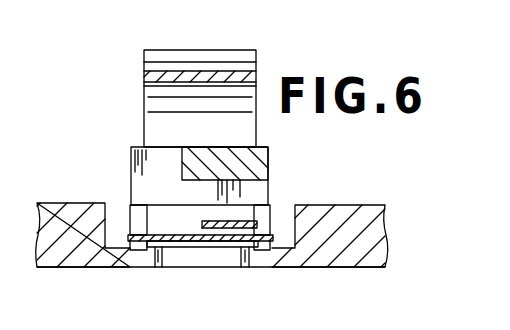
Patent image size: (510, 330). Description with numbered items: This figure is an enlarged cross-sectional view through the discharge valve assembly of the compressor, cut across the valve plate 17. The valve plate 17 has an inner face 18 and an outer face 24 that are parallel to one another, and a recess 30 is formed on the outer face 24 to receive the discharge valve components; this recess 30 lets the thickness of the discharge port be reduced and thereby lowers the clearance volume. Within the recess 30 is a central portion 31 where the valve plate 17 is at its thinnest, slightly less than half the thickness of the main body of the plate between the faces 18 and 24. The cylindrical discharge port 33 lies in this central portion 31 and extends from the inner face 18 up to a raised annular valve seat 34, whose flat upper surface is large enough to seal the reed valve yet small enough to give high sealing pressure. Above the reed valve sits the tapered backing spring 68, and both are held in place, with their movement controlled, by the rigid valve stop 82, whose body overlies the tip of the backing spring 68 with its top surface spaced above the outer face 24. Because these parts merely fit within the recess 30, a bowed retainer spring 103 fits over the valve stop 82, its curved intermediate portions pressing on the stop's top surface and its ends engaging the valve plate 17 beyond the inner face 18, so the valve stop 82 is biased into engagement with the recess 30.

The retainer spring 103 is at (152, 50).
The valve stop 82 is at (190, 150).
The backing spring 68 is at (202, 221).
The outer face 24 is at (70, 203).
The valve plate 17 is at (337, 222).
The central portion 31 is at (118, 245).
The recess 30 is at (287, 228).
The valve seat 34 is at (142, 243).
The discharge port 33 is at (241, 260).
The inner face 18 is at (343, 267).